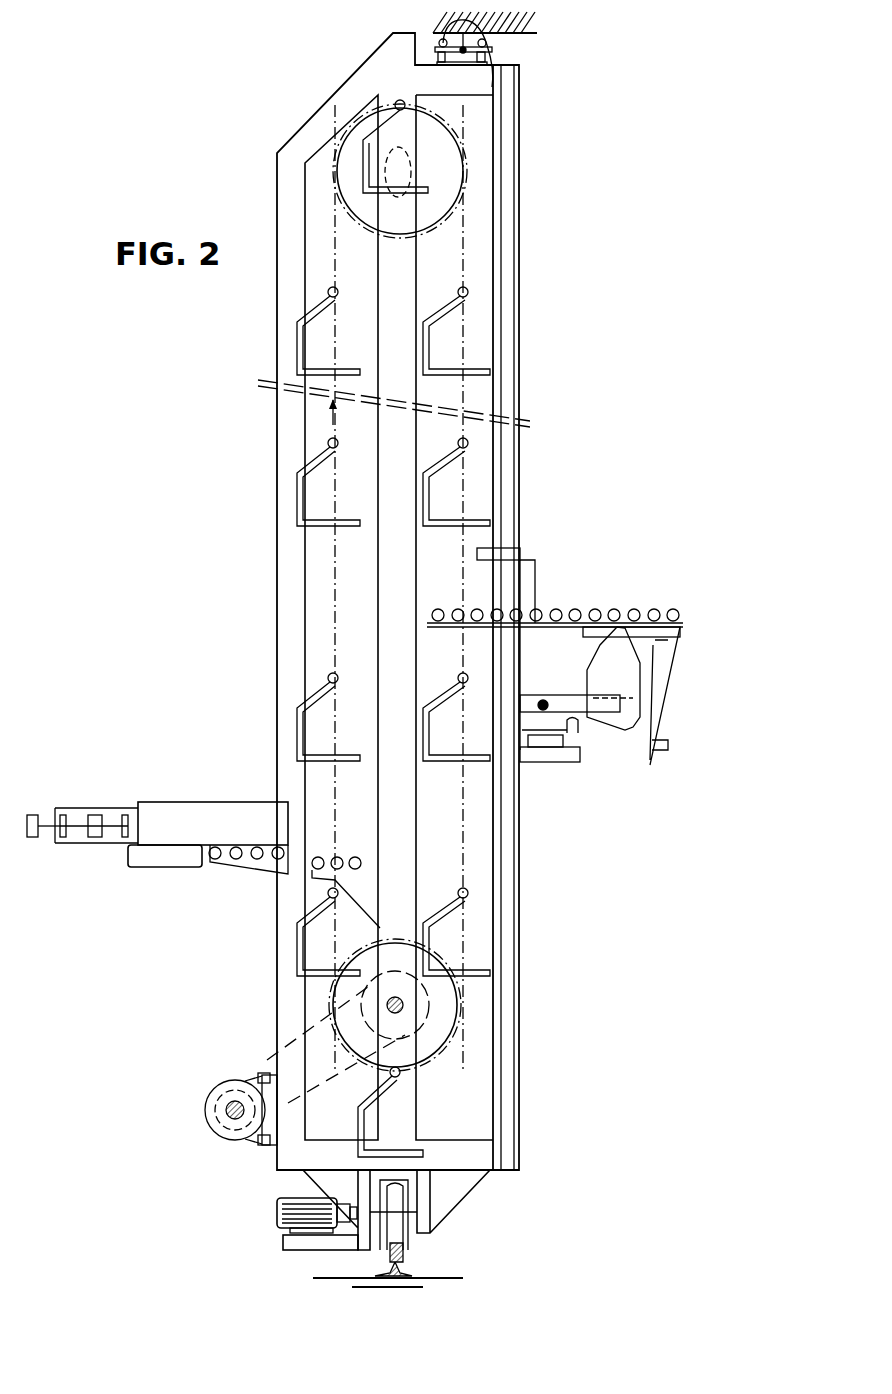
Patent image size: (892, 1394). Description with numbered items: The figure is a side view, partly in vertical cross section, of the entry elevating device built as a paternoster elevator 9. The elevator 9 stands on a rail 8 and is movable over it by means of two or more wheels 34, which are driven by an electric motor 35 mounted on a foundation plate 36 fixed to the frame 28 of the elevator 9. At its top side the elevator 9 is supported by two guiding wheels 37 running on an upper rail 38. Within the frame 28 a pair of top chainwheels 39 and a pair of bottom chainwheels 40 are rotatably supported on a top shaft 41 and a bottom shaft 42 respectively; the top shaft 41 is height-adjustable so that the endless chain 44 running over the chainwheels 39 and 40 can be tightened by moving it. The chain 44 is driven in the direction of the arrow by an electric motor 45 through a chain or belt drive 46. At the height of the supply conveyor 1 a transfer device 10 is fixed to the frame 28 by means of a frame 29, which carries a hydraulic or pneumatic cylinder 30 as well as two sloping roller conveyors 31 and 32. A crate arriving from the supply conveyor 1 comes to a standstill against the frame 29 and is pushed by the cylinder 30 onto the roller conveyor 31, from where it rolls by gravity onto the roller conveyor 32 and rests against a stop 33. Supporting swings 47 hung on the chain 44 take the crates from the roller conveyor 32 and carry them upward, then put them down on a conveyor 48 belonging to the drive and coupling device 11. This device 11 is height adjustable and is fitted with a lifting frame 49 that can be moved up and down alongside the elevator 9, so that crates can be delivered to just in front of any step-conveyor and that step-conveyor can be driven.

The supply conveyor 1 is at (158, 870).
The rails 8 is at (405, 1262).
The paternoster elevator 9 is at (277, 163).
The transfer device 10 is at (182, 800).
The drive and coupling device 11 is at (583, 607).
The frame 28 is at (282, 403).
The frame 29 is at (215, 800).
The hydraulic or pneumatic cylinder 30 is at (47, 815).
The sloping roller conveyor 31 is at (256, 864).
The sloping roller conveyor 32 is at (305, 912).
The stop 33 is at (372, 857).
The wheels 34 is at (400, 1238).
The electric motor 35 is at (275, 1210).
The foundation plate 36 is at (290, 1240).
The guiding wheels 37 is at (488, 42).
The rail 38 is at (495, 86).
The chainwheels 39 is at (452, 162).
The chainwheels 40 is at (443, 1025).
The top shaft 41 is at (407, 190).
The bottom shaft 42 is at (403, 1012).
The endless chain 44 is at (473, 350).
The electric motor 45 is at (207, 1098).
The chain or belt drive 46 is at (300, 1030).
The supporting swings 47 is at (297, 345).
The conveyor 48 is at (614, 625).
The lifting frame 49 is at (530, 562).